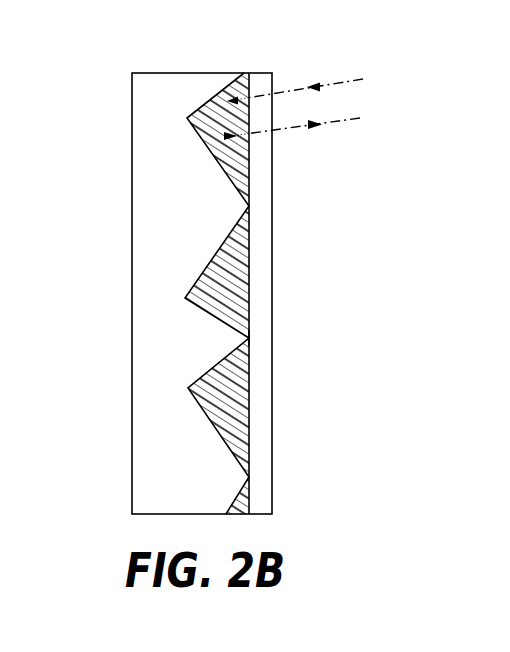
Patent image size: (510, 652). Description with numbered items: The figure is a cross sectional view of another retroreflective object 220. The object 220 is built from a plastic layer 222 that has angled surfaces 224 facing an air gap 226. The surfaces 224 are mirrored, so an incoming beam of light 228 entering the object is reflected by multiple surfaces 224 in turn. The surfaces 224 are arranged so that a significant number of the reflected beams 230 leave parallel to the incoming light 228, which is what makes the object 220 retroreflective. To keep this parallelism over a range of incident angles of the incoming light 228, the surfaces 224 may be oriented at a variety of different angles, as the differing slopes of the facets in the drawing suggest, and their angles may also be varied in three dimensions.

The retroreflective object 220 is at (266, 34).
The plastic layer 222 is at (235, 383).
The angled surfaces 224 is at (213, 100).
The air gap 226 is at (173, 357).
The incoming beam of light 228 is at (335, 80).
The reflected beams 230 is at (338, 123).